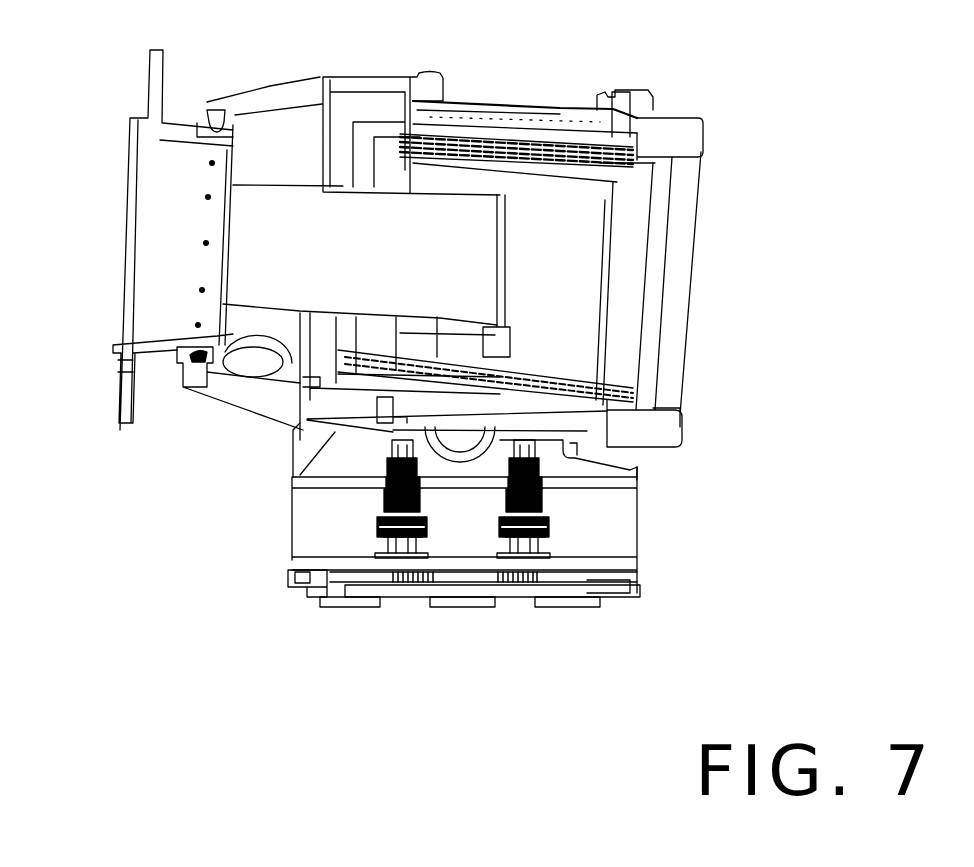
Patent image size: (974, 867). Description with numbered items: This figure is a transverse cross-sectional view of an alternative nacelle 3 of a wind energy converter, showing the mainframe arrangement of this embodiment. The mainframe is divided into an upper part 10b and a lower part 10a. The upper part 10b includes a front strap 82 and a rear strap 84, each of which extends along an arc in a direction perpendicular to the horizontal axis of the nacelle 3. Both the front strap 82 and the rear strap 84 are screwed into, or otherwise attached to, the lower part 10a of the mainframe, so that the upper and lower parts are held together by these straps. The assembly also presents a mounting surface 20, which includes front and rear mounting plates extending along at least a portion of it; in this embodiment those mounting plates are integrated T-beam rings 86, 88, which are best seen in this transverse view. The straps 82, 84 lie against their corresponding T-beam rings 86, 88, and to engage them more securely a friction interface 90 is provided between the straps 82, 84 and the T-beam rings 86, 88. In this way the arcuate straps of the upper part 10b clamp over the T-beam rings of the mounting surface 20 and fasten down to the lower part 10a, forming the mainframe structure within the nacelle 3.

The nacelle 3 is at (437, 303).
The lower part of the mainframe 10a is at (706, 463).
The upper part of the mainframe 10b is at (459, 240).
The mounting surface 20 is at (660, 153).
The front strap 82 is at (401, 108).
The rear strap 84 is at (611, 90).
The T-beam ring 86 is at (642, 125).
The T-beam ring 88 is at (408, 108).
The friction interface 90 is at (597, 108).